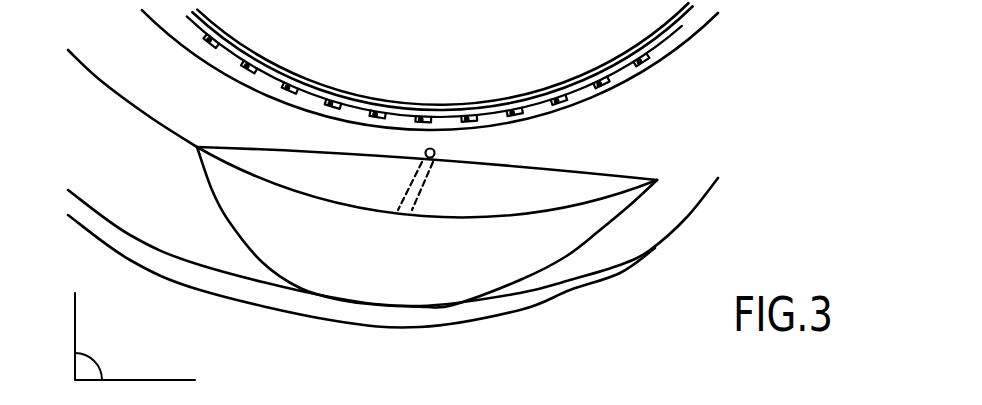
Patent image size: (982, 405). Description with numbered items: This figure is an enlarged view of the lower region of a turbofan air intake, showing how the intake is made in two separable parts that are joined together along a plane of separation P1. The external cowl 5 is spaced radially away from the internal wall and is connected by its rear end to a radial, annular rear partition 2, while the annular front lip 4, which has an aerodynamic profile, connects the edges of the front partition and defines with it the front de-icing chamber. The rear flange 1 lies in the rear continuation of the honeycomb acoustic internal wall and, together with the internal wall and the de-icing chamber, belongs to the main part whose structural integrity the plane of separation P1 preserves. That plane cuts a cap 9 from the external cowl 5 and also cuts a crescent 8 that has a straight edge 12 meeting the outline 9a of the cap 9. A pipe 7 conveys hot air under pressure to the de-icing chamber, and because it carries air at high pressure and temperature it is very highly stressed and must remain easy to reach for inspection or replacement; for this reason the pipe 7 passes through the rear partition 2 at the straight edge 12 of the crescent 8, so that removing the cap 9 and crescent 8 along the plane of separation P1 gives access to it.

The rear flange 1 is at (383, 108).
The rear partition 2 is at (202, 90).
The front lip 4 is at (302, 305).
The external cowl 5 is at (157, 208).
The pipe 7 is at (422, 181).
The crescent 8 is at (520, 193).
The cap 9 is at (407, 277).
The outline of the cap 9a is at (252, 255).
The straight edge 12 is at (583, 175).
The plane of separation P1 is at (80, 372).